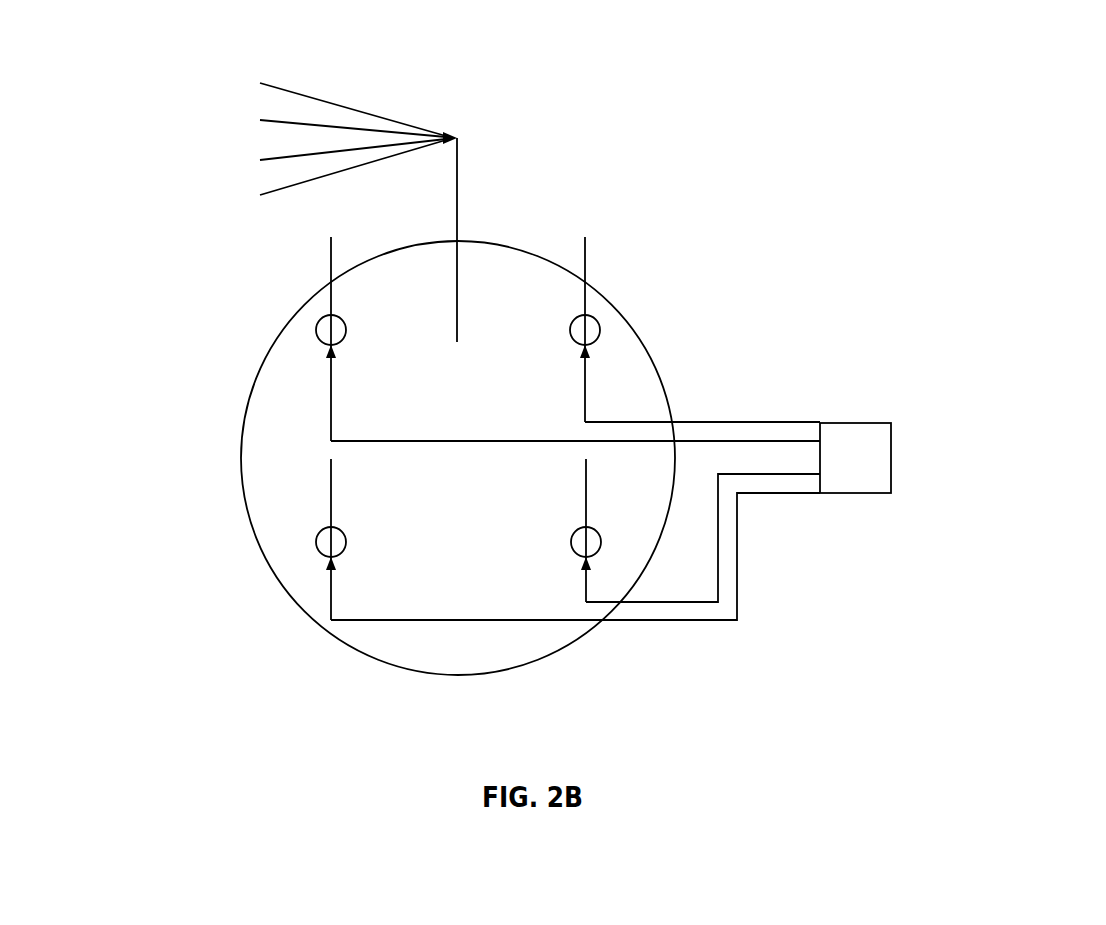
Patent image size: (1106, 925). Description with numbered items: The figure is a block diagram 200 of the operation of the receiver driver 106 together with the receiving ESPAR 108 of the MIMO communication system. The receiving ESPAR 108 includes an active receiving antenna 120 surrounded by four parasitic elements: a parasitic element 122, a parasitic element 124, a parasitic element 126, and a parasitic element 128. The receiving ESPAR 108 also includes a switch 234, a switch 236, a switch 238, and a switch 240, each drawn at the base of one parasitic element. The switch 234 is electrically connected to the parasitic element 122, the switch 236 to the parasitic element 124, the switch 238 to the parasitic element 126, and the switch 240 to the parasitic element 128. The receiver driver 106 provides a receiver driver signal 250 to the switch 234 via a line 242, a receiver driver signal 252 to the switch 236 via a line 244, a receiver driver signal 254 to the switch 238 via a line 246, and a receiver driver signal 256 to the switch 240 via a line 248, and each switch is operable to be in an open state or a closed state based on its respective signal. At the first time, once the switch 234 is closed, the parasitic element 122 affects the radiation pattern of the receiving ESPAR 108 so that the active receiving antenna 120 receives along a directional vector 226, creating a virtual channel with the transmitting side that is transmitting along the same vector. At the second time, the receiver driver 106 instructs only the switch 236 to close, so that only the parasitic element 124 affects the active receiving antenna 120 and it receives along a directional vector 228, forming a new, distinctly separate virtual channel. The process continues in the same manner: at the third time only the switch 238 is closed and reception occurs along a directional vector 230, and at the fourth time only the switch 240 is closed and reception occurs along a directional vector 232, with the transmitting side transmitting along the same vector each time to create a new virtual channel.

The block diagram 200 is at (113, 62).
The receiver driver 106 is at (876, 469).
The receiving ESPAR 108 is at (480, 662).
The active receiving antenna 120 is at (452, 202).
The parasitic element 122 is at (336, 480).
The parasitic element 124 is at (326, 262).
The parasitic element 126 is at (581, 480).
The parasitic element 128 is at (590, 262).
The directional vector 226 is at (253, 92).
The directional vector 228 is at (253, 131).
The directional vector 230 is at (253, 171).
The directional vector 232 is at (253, 209).
The switch 234 is at (350, 542).
The switch 236 is at (350, 330).
The switch 238 is at (568, 542).
The switch 240 is at (567, 330).
The line 242 is at (750, 495).
The line 244 is at (800, 439).
The line 246 is at (800, 476).
The line 248 is at (765, 420).
The receiver driver signal 250 is at (336, 585).
The receiver driver signal 252 is at (336, 378).
The receiver driver signal 254 is at (581, 585).
The receiver driver signal 256 is at (580, 378).